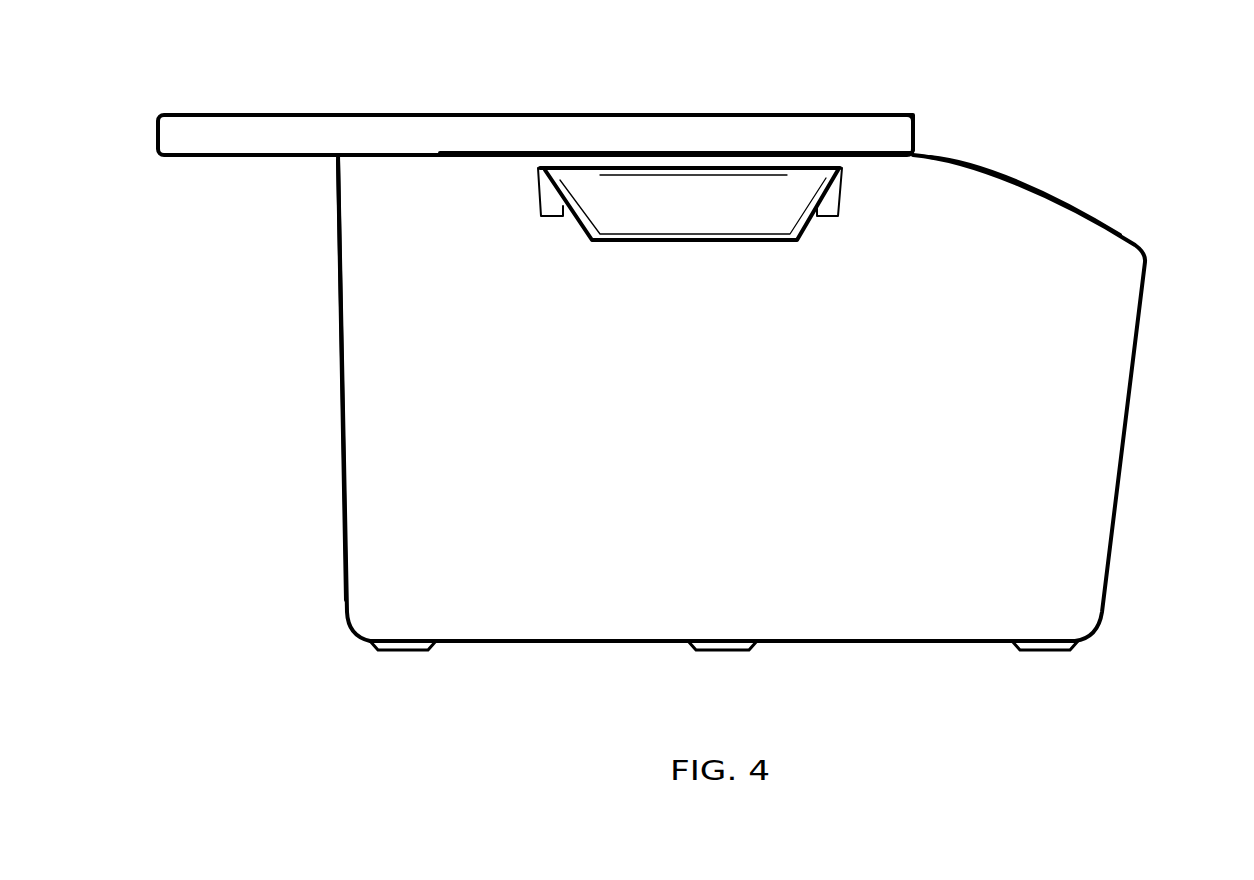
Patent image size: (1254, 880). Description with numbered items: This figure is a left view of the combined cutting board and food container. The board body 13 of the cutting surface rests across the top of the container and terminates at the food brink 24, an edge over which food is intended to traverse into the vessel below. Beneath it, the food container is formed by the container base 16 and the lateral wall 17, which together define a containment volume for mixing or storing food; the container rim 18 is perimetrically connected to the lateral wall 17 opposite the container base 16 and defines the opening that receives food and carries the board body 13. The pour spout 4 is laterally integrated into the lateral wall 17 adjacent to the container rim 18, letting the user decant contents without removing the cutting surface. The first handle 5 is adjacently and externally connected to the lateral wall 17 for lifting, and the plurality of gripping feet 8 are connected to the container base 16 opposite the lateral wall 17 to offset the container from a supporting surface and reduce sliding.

The pour spout 4 is at (1130, 285).
The first handle 5 is at (687, 210).
The plurality of gripping feet 8 is at (398, 648).
The board body 13 is at (287, 130).
The container base 16 is at (580, 645).
The lateral wall 17 is at (383, 448).
The container rim 18 is at (1095, 207).
The food brink 24 is at (913, 115).